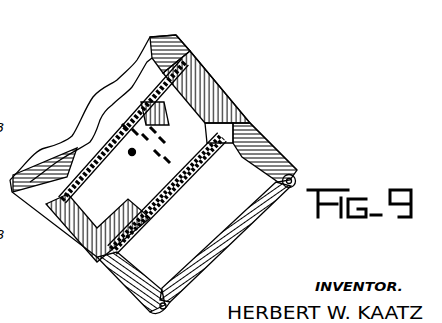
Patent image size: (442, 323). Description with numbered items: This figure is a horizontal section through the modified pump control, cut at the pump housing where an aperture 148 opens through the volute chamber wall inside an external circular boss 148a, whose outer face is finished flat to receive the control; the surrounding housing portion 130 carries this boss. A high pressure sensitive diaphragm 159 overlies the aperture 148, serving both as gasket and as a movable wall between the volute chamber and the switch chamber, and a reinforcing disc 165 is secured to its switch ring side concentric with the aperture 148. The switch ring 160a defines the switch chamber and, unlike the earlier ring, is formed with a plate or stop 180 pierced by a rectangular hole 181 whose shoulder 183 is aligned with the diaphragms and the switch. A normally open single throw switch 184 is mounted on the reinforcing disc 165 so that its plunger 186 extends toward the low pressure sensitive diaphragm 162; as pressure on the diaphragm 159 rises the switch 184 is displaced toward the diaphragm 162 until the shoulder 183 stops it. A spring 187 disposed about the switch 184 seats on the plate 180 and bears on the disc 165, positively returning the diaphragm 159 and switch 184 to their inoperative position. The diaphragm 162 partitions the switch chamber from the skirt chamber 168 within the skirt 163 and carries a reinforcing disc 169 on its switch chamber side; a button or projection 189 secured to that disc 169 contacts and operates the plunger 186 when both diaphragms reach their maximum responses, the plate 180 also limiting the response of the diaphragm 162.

The housing 130 is at (148, 46).
The aperture 148 is at (110, 105).
The external circular boss 148a is at (186, 53).
The switch 184 is at (107, 125).
The high pressure sensitive diaphragm 159 is at (145, 100).
The reinforcing disc 165 is at (186, 100).
The switch ring 160a is at (242, 100).
The low pressure sensitive diaphragm 162 is at (248, 118).
The reinforcing disc 169 is at (252, 137).
The skirt 163 is at (272, 157).
The plate or stop 180 is at (178, 135).
The rectangular hole 181 is at (204, 160).
The plunger 186 is at (181, 179).
The button or projection 189 is at (168, 197).
The shoulder 183 is at (150, 214).
The spring 187 is at (116, 188).
The skirt chamber 168 is at (170, 263).